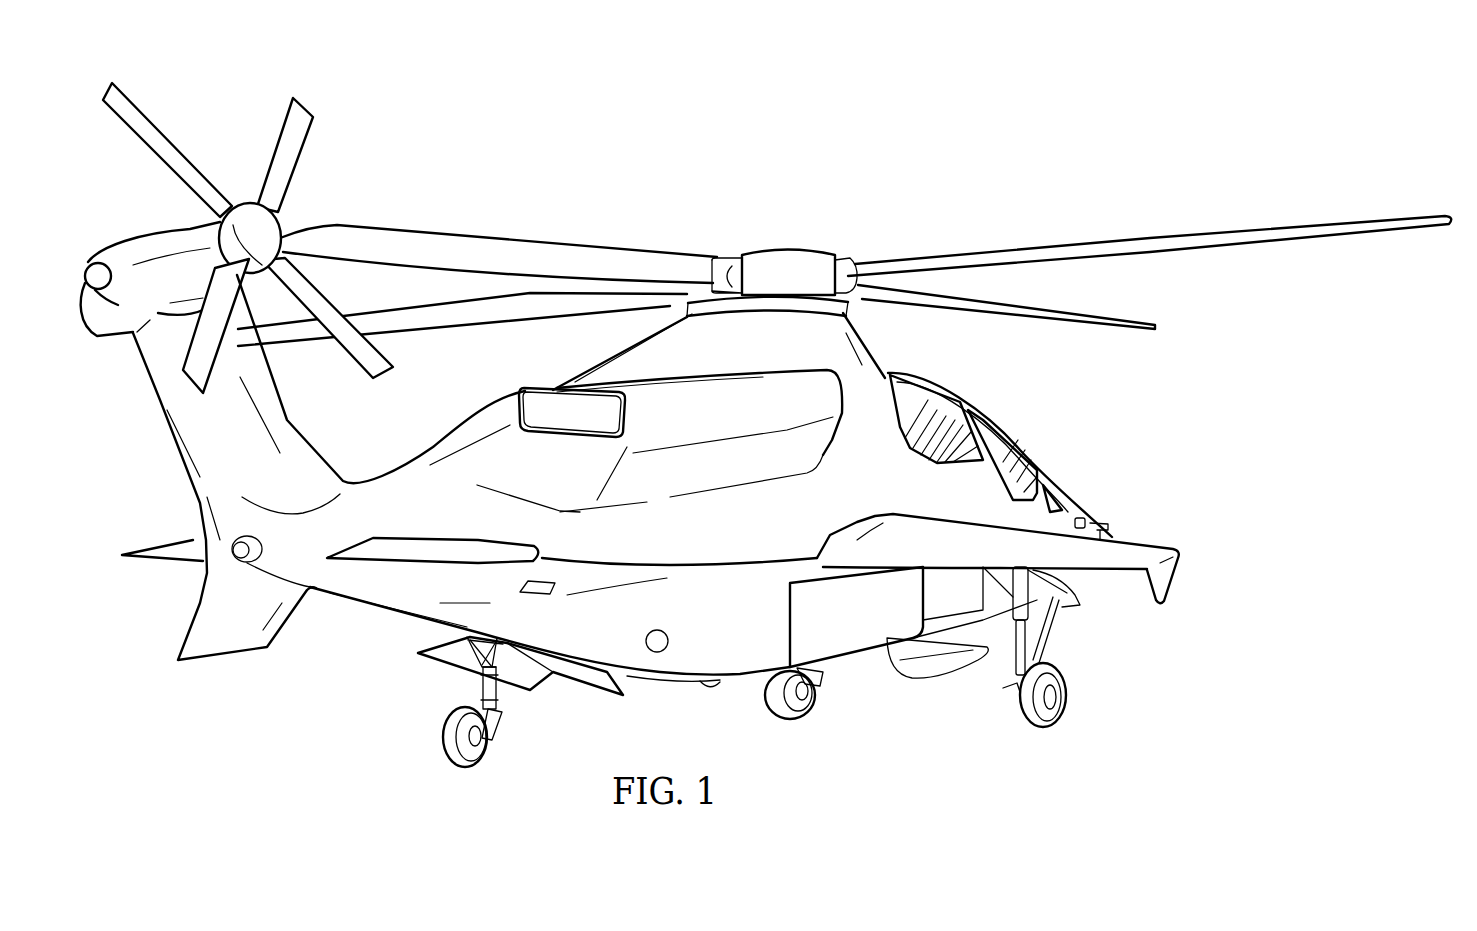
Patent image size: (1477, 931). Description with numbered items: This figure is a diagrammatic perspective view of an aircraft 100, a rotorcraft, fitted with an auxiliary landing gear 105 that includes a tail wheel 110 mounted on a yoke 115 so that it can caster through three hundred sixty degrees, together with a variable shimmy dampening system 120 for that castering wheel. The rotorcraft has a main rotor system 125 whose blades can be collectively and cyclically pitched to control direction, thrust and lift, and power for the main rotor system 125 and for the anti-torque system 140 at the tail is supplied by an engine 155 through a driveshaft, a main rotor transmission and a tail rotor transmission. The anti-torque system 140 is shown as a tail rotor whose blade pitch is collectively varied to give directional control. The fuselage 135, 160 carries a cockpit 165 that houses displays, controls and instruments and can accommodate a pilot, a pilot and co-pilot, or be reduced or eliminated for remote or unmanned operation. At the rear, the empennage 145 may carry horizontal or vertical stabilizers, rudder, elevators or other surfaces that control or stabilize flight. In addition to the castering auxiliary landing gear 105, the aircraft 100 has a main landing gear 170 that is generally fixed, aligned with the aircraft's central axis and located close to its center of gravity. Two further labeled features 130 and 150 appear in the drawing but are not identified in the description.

The aircraft 100 is at (893, 142).
The auxiliary landing gear 105 is at (411, 751).
The tail wheel 110 is at (470, 767).
The yoke 115 is at (502, 713).
The variable shimmy dampening system 120 is at (458, 686).
The main rotor system 125 is at (746, 236).
The main rotor blades 130 is at (523, 243).
The fuselage 135 is at (732, 670).
The anti-torque system 140 is at (133, 212).
The empennage 145 is at (393, 607).
The tail rotor blades 150 is at (331, 166).
The engine 155 is at (491, 387).
The fuselage 160 is at (428, 540).
The cockpit 165 is at (985, 400).
The main landing gear 170 is at (812, 730).